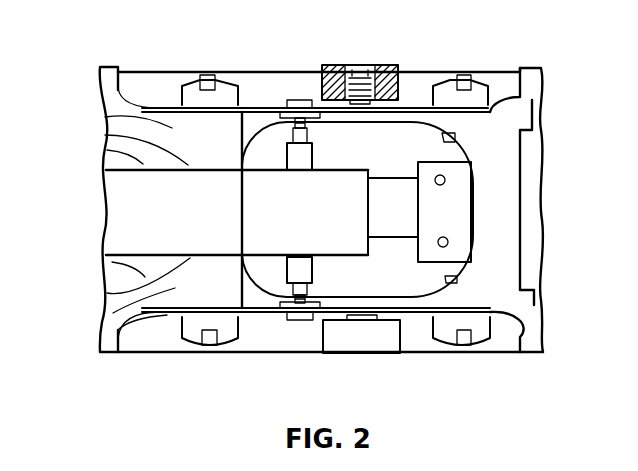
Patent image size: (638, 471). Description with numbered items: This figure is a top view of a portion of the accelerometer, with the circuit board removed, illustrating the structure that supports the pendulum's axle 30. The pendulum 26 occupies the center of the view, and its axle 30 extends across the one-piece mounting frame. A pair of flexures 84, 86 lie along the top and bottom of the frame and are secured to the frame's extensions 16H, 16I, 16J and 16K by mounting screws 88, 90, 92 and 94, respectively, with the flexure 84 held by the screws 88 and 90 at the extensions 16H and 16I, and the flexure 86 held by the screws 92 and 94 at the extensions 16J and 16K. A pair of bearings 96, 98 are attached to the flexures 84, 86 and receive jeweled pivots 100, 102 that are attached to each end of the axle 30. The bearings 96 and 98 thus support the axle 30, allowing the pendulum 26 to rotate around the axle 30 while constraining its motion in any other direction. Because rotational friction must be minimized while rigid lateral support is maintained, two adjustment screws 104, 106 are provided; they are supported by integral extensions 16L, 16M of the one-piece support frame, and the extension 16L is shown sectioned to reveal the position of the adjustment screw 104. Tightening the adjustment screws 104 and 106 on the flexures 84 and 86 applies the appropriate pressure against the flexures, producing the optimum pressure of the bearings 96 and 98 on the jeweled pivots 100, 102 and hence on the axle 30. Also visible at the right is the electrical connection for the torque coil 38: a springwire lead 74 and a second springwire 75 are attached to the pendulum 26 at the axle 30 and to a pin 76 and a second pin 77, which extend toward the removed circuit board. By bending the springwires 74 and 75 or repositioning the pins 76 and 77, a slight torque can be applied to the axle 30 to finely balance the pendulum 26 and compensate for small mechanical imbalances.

The extension 16H is at (112, 117).
The extension 16I is at (532, 99).
The extension 16J is at (108, 291).
The extension 16K is at (513, 297).
The integral extension 16L is at (387, 70).
The integral extension 16M is at (342, 343).
The pendulum 26 is at (348, 212).
The axle 30 is at (293, 172).
The torque coil 38 is at (107, 148).
The springwire lead 74 is at (447, 141).
The springwire 75 is at (400, 232).
The pin 76 is at (446, 178).
The second pin 77 is at (449, 241).
The flexure 84 is at (267, 108).
The flexure 86 is at (262, 315).
The mounting screw 88 is at (190, 83).
The mounting screw 90 is at (478, 83).
The mounting screw 92 is at (190, 333).
The mounting screw 94 is at (483, 335).
The bearing 96 is at (296, 100).
The bearing 98 is at (307, 322).
The jeweled pivot 100 is at (307, 127).
The jeweled pivot 102 is at (306, 297).
The adjustment screw 104 is at (354, 80).
The adjustment screw 106 is at (367, 318).